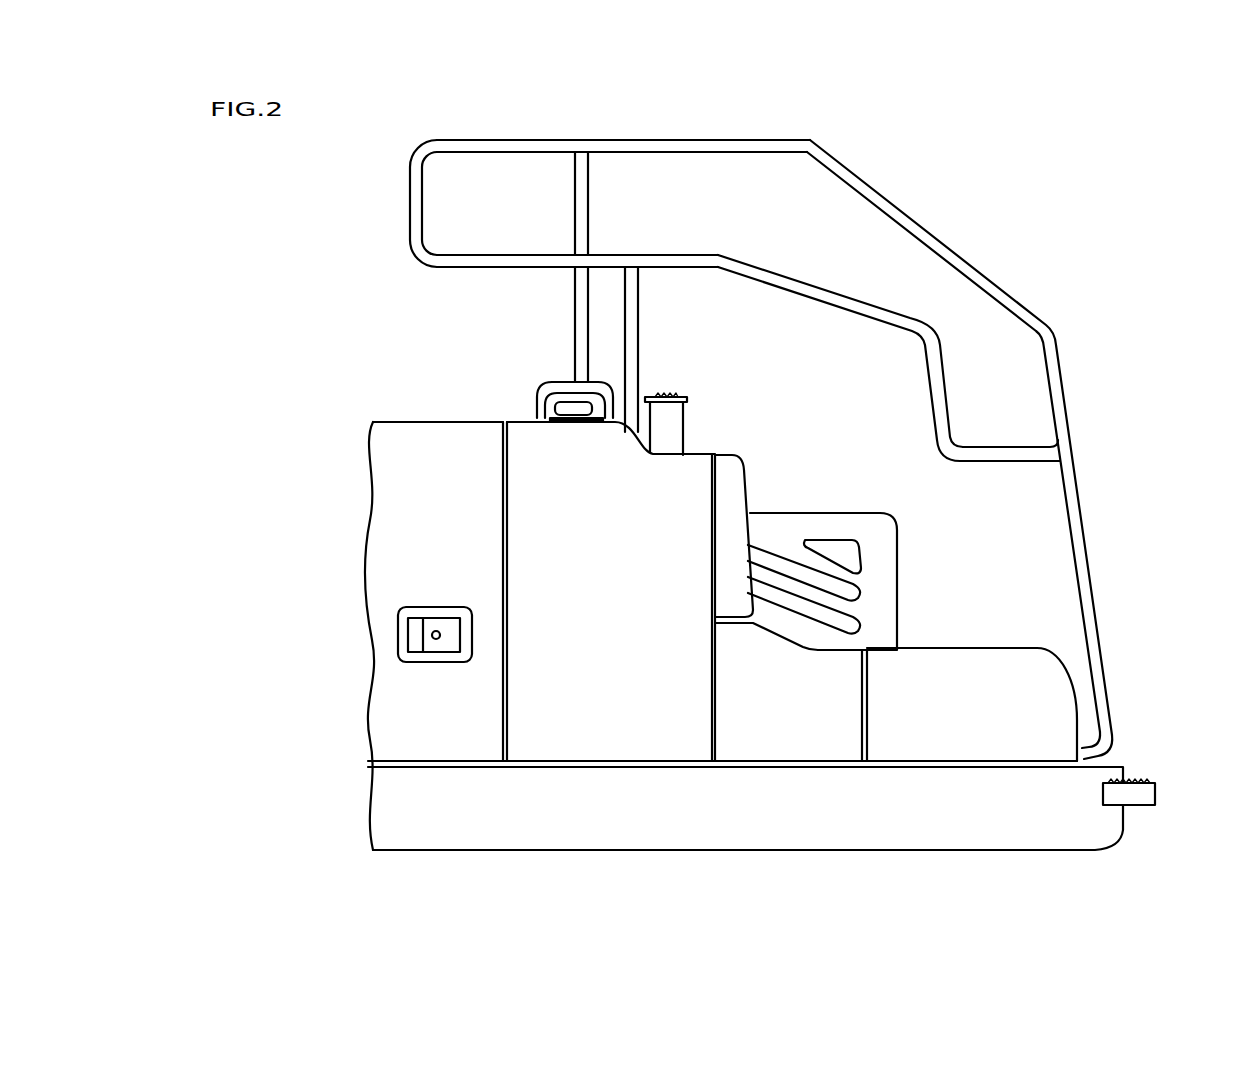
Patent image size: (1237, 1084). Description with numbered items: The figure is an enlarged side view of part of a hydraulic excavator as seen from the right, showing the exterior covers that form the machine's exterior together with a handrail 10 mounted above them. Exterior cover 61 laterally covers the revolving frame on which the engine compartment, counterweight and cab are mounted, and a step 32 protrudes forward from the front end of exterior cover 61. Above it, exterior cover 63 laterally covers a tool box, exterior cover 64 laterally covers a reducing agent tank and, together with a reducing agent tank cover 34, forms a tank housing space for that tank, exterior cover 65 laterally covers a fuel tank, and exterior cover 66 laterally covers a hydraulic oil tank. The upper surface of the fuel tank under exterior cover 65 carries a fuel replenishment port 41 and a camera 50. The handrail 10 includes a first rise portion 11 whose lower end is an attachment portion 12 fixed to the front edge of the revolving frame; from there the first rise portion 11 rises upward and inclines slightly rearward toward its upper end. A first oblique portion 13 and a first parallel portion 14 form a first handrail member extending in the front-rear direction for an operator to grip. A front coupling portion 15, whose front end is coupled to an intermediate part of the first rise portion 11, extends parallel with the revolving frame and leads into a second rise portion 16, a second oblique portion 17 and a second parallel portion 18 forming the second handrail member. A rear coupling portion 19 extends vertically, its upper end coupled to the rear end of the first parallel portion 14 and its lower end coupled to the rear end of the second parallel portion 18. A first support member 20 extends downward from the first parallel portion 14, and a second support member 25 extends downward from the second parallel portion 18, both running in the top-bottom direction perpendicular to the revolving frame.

The handrail 10 is at (856, 161).
The first rise portion 11 is at (1085, 517).
The attachment portion 12 is at (1086, 758).
The first oblique portion 13 is at (937, 250).
The first parallel portion 14 is at (637, 143).
The front coupling portion 15 is at (1002, 452).
The second rise portion 16 is at (935, 371).
The second oblique portion 17 is at (840, 300).
The second parallel portion 18 is at (515, 265).
The rear coupling portion 19 is at (410, 212).
The first support member 20 is at (590, 200).
The second support member 25 is at (640, 325).
The step 32 is at (1148, 790).
The reducing agent tank cover 34 is at (842, 527).
The fuel replenishment port 41 is at (685, 425).
The camera 50 is at (552, 385).
The exterior cover 61 is at (945, 802).
The exterior cover 63 is at (975, 680).
The exterior cover 64 is at (800, 690).
The exterior cover 65 is at (618, 700).
The exterior cover 66 is at (422, 710).